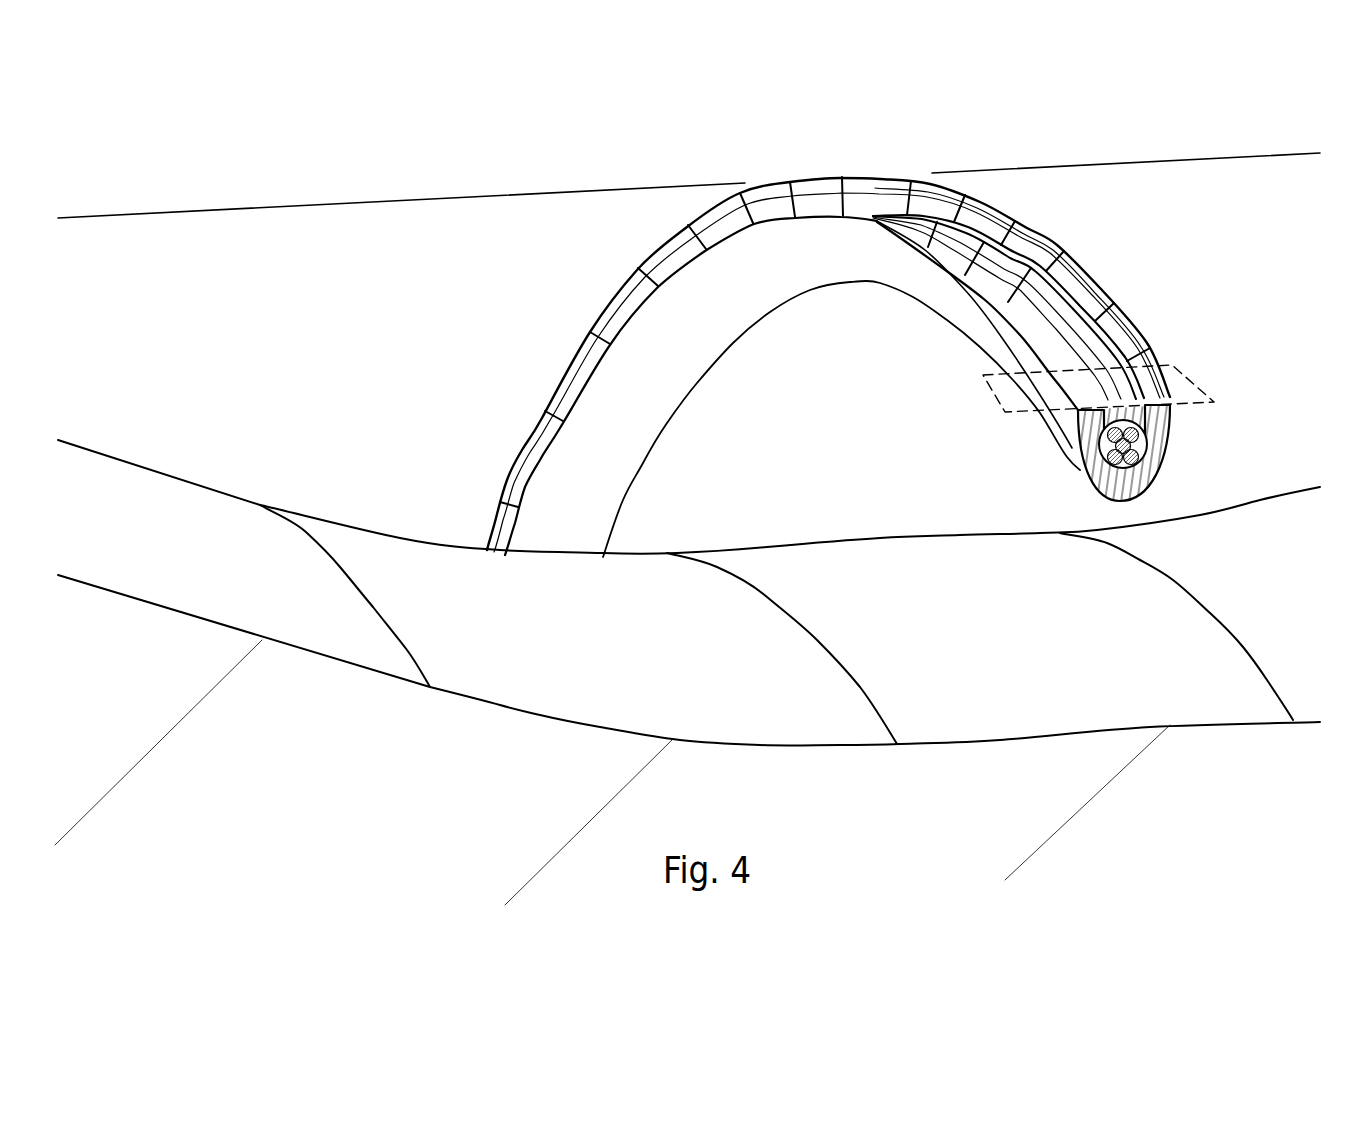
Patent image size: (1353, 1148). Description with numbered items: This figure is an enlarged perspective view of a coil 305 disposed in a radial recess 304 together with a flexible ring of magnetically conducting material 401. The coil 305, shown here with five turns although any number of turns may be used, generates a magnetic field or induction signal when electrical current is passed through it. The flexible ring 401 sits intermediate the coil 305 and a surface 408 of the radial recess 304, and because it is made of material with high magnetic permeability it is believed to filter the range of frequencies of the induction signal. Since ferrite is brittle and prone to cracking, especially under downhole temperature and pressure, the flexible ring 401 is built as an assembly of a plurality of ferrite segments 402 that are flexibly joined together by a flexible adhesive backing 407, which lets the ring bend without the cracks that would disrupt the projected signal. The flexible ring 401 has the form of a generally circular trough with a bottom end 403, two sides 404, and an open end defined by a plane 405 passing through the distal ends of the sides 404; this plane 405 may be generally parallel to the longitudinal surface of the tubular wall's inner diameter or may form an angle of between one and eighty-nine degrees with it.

The radial recess 304 is at (689, 475).
The coil 305 is at (1205, 442).
The flexible ring of magnetically conducting material 401 is at (841, 419).
The ferrite segments 402 is at (828, 308).
The bottom end 403 is at (1004, 370).
The sides 404 is at (1182, 432).
The plane 405 is at (1098, 268).
The flexible adhesive backing 407 is at (600, 485).
The surface 408 is at (921, 646).